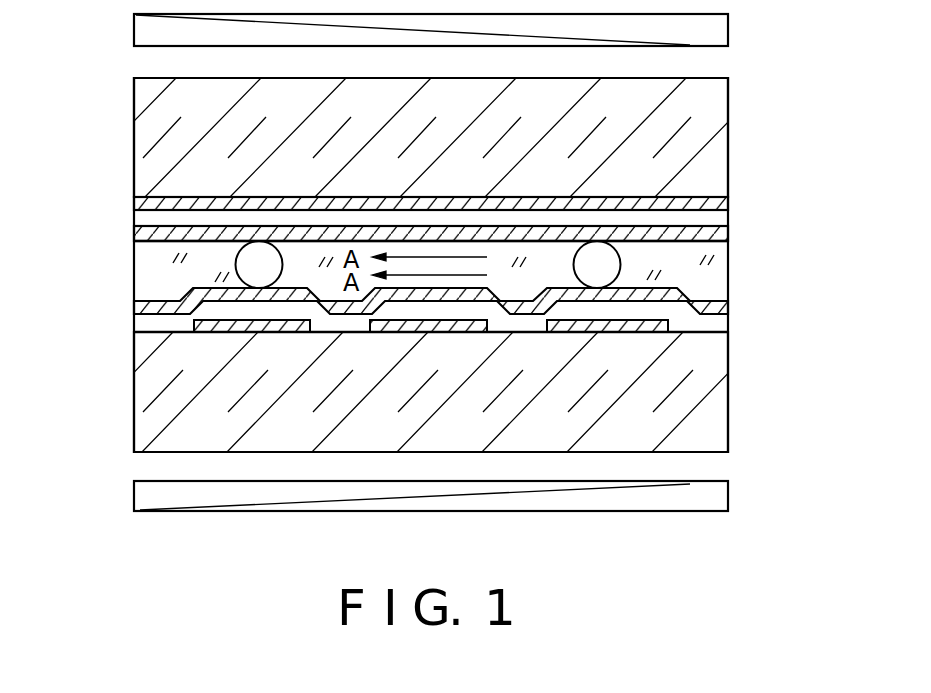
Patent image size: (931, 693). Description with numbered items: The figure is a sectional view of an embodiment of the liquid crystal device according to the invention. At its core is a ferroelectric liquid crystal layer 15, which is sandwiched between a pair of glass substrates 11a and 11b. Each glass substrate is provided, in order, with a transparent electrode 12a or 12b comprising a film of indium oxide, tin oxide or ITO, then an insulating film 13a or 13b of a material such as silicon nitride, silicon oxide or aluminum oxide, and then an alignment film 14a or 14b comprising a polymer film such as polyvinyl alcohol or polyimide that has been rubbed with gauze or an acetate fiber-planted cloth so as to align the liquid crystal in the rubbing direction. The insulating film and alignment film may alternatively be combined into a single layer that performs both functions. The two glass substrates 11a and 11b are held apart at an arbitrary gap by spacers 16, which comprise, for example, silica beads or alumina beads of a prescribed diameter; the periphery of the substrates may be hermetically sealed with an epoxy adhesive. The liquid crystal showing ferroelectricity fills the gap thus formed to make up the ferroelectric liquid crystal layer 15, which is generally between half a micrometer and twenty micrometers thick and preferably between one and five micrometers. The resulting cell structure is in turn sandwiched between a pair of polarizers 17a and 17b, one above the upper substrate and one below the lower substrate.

The glass substrate 11a is at (731, 146).
The glass substrate 11b is at (731, 406).
The transparent electrode 12a is at (731, 199).
The transparent electrode 12b is at (194, 323).
The insulating film 13a is at (731, 223).
The insulating film 13b is at (731, 328).
The alignment film 14a is at (731, 238).
The alignment film 14b is at (731, 309).
The ferroelectric liquid crystal layer 15 is at (731, 283).
The spacers 16 is at (238, 263).
The polarizer 17a is at (134, 34).
The polarizer 17b is at (134, 497).